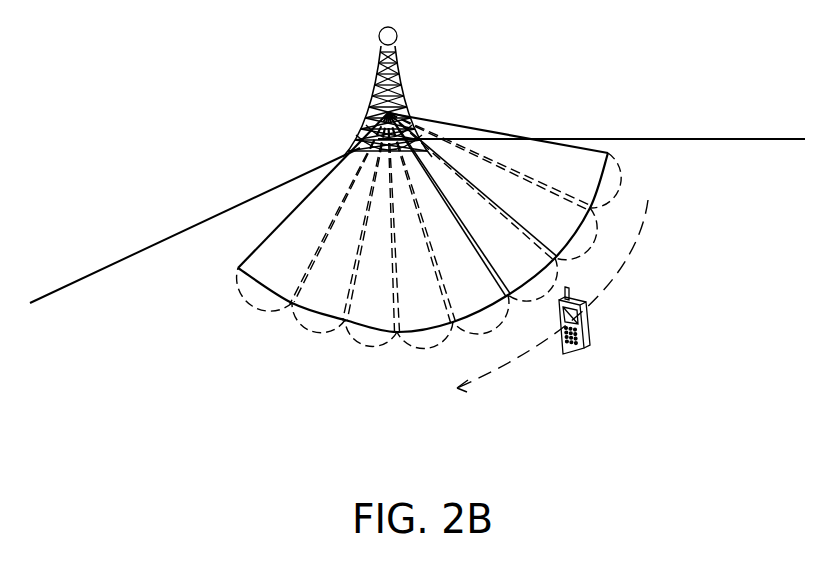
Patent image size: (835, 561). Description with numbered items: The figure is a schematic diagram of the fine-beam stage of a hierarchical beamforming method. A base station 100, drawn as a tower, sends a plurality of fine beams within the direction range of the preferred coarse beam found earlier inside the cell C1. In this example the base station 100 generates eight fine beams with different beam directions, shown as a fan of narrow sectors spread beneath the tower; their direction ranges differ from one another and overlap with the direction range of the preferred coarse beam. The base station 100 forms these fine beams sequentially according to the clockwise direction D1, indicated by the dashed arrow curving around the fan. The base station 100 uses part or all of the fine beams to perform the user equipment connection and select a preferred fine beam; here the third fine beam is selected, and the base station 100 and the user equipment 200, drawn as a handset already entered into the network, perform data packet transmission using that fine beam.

The base station 100 is at (402, 78).
The user equipment 200 is at (587, 332).
The cell C1 is at (675, 139).
The clockwise direction D1 is at (632, 252).